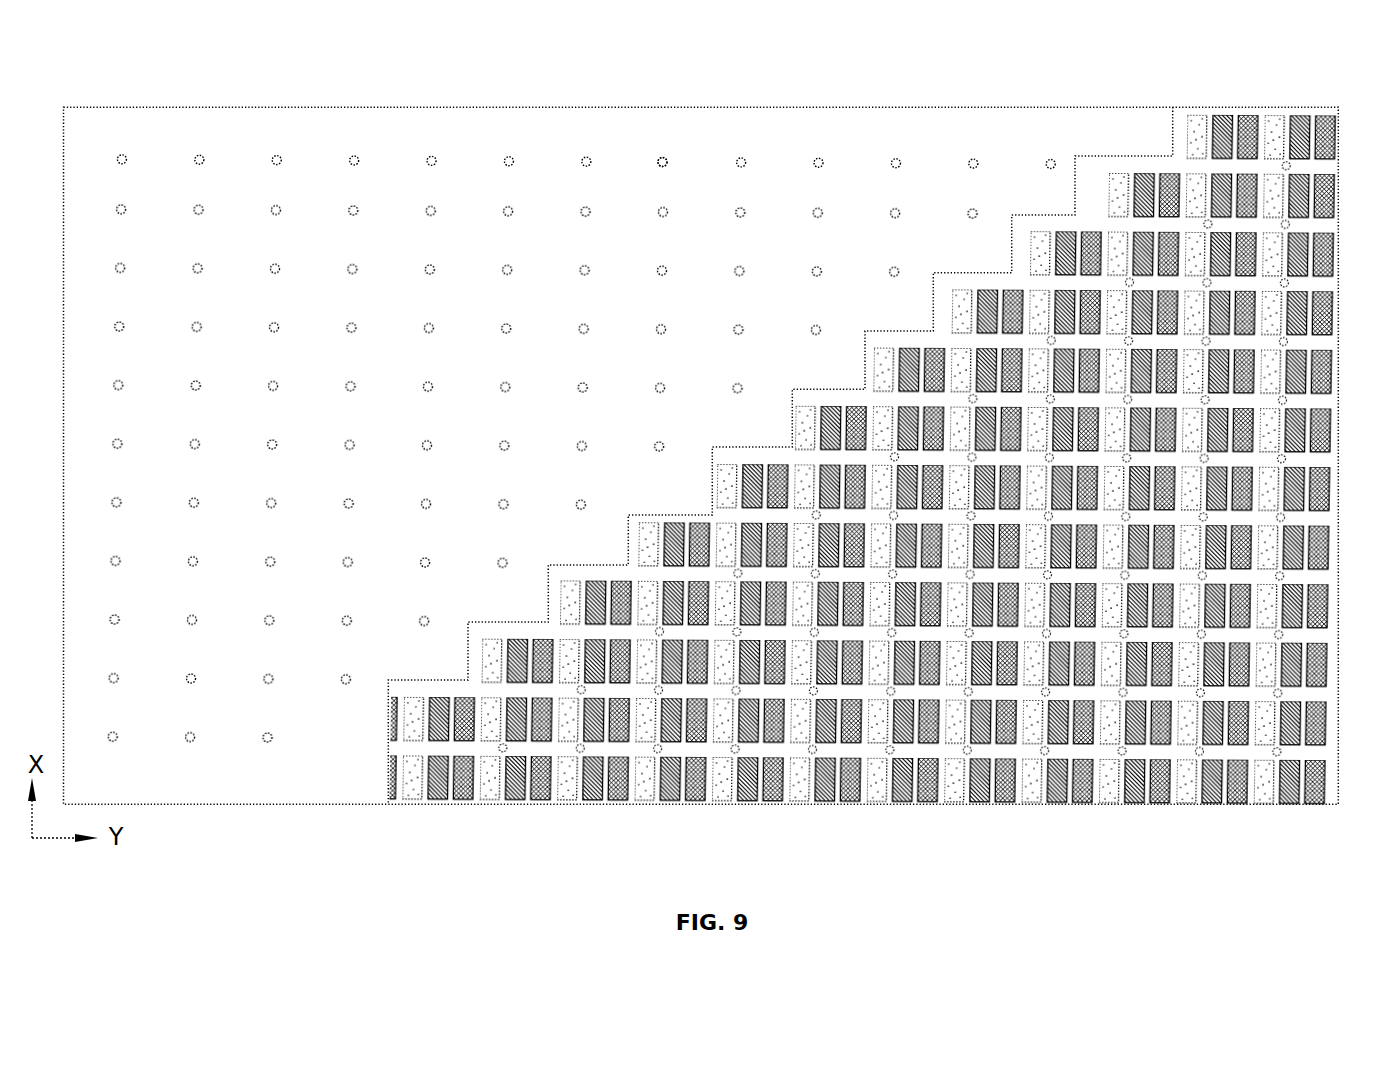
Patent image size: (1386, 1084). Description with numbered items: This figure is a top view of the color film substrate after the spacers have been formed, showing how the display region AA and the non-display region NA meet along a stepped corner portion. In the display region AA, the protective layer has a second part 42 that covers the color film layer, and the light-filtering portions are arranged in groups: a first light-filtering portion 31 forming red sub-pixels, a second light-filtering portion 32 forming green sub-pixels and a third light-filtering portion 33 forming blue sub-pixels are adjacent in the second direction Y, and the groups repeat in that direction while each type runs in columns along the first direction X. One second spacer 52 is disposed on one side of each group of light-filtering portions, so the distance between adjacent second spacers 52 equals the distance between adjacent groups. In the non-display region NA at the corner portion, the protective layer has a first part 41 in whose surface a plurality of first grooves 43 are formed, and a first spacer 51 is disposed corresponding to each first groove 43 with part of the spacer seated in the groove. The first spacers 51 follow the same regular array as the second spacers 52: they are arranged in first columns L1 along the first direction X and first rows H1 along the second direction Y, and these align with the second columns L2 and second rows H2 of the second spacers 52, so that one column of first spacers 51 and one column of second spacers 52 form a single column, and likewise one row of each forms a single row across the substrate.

The first light-filtering portion 31 is at (1217, 113).
The second light-filtering portion 32 is at (1323, 118).
The third light-filtering portion 33 is at (1275, 145).
The first part 41 is at (613, 143).
The second part 42 is at (1182, 145).
The first groove 43 is at (662, 162).
The first spacer 51 is at (662, 162).
The second spacer 52 is at (1291, 164).
The display region AA is at (973, 145).
The non-display region NA is at (1302, 285).
The first row H1 is at (85, 679).
The second row H2 is at (1303, 695).
The first column L1 is at (742, 132).
The second column L2 is at (735, 782).